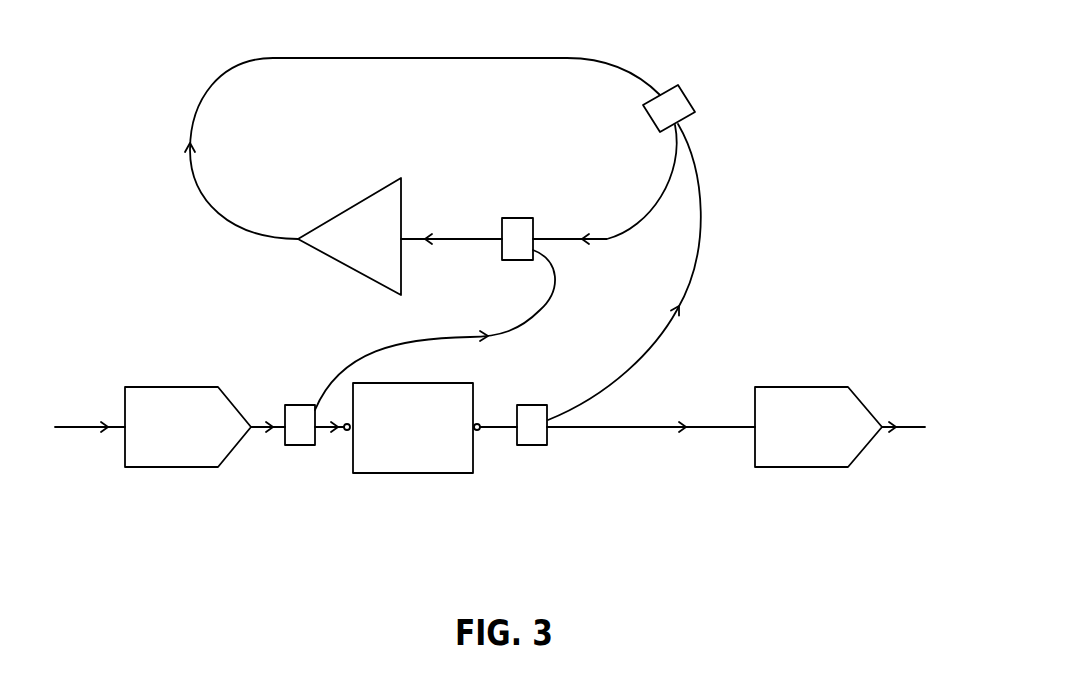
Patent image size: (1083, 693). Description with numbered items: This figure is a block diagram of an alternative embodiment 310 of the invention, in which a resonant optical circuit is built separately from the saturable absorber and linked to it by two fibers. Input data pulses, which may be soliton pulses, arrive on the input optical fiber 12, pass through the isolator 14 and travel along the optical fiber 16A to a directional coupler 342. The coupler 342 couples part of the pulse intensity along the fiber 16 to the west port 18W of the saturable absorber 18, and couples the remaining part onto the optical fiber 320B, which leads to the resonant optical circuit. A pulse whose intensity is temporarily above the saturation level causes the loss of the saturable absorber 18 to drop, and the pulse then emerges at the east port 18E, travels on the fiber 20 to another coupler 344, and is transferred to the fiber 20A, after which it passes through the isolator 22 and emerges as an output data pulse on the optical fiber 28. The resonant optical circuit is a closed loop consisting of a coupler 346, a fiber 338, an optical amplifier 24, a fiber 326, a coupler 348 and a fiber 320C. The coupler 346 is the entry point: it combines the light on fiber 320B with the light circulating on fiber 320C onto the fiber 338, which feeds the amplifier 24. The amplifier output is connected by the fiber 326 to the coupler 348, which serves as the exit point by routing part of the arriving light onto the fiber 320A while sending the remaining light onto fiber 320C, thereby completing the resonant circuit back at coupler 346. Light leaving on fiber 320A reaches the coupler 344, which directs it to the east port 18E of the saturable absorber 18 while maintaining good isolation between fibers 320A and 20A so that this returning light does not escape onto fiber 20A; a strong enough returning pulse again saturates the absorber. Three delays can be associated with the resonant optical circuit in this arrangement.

The input optical fiber 12 is at (72, 423).
The isolator 14 is at (192, 458).
The optical fiber 16A is at (255, 427).
The directional coupler 342 is at (297, 445).
The fiber 16 is at (325, 429).
The west port of saturable absorber 18W is at (347, 430).
The saturable absorber 18 is at (425, 464).
The east port of saturable absorber 18E is at (482, 425).
The fiber 20 is at (485, 429).
The coupler 344 is at (530, 445).
The fiber 20A is at (645, 429).
The isolator 22 is at (814, 458).
The optical fiber 28 is at (905, 424).
The fiber 326 is at (245, 67).
The coupler 348 is at (690, 90).
The coupler 346 is at (518, 218).
The fiber 320C is at (648, 217).
The fiber 338 is at (443, 240).
The optical amplifier 24 is at (384, 259).
The optical fiber 320B is at (538, 315).
The fiber 320A is at (657, 343).
The optical regenerator system 310 is at (276, 568).